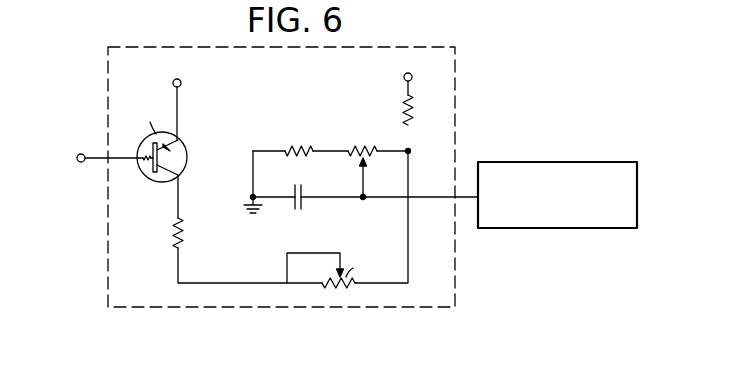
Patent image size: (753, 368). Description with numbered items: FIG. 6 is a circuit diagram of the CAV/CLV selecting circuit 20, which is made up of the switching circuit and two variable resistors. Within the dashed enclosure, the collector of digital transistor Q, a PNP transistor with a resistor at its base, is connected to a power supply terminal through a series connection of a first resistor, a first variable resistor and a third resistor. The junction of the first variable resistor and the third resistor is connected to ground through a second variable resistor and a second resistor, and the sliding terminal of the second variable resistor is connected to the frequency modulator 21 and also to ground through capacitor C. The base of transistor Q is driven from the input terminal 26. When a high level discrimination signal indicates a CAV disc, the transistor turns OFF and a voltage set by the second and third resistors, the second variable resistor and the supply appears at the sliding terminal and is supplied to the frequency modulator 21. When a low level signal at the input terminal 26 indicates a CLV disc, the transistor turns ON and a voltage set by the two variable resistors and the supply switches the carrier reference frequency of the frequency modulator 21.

The CAV/CLV selecting circuit 20 is at (388, 46).
The frequency modulator 21 is at (554, 161).
The input terminal 26 is at (82, 153).